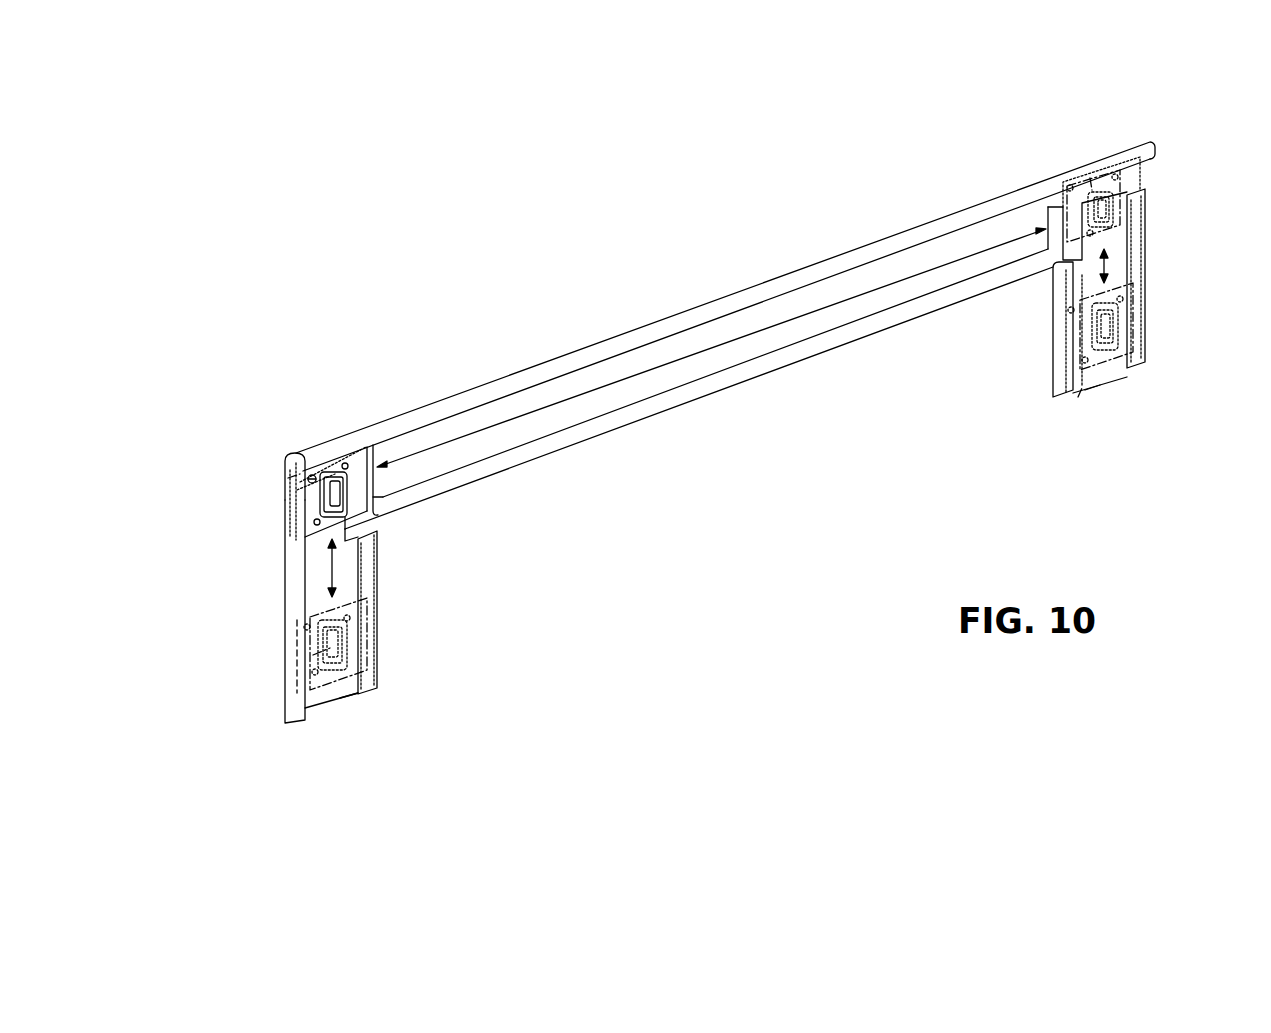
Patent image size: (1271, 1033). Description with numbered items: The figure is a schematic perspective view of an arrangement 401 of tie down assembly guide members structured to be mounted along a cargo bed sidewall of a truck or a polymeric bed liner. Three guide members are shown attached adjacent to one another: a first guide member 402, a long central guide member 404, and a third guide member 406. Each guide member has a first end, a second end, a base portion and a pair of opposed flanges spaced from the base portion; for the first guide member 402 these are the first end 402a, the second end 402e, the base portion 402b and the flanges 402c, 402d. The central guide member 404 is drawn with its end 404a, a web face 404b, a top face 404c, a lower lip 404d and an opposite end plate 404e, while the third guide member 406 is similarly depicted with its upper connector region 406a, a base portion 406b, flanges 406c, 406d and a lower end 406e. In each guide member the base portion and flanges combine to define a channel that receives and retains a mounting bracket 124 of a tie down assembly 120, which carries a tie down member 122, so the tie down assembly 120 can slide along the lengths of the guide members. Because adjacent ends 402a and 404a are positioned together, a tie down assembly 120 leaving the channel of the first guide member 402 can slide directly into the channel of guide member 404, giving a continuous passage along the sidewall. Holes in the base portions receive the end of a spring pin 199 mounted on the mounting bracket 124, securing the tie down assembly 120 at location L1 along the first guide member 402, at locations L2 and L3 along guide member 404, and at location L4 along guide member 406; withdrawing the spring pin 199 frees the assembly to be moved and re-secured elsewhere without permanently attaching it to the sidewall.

The rail assembly 401 is at (538, 478).
The guide member 404 is at (582, 346).
The end of guide member 404a is at (294, 456).
The rail web face 404b is at (498, 412).
The rail top face 404c is at (405, 427).
The rail bottom lip 404d is at (678, 395).
The rail second end plate 404e is at (1147, 140).
The first guide member 402 is at (287, 620).
The first end 402a is at (297, 537).
The base portion 402b is at (323, 570).
The flange 402c is at (373, 580).
The flange 402d is at (287, 688).
The second end 402e is at (333, 697).
The guide member 406 is at (1147, 240).
The second bracket upper connector 406a is at (1143, 182).
The second bracket adjustment direction 406b is at (1117, 260).
The second bracket left flange 406c is at (1053, 340).
The second bracket right flange 406d is at (1145, 340).
The second bracket bottom edge 406e is at (1100, 388).
The tie down assembly 120 is at (295, 477).
The connector 122 is at (353, 497).
The mounting bracket 124 is at (308, 502).
The spring pin 199 is at (312, 471).
The location L1 is at (313, 655).
The location L2 is at (288, 478).
The location L3 is at (1090, 178).
The location L4 is at (1078, 397).